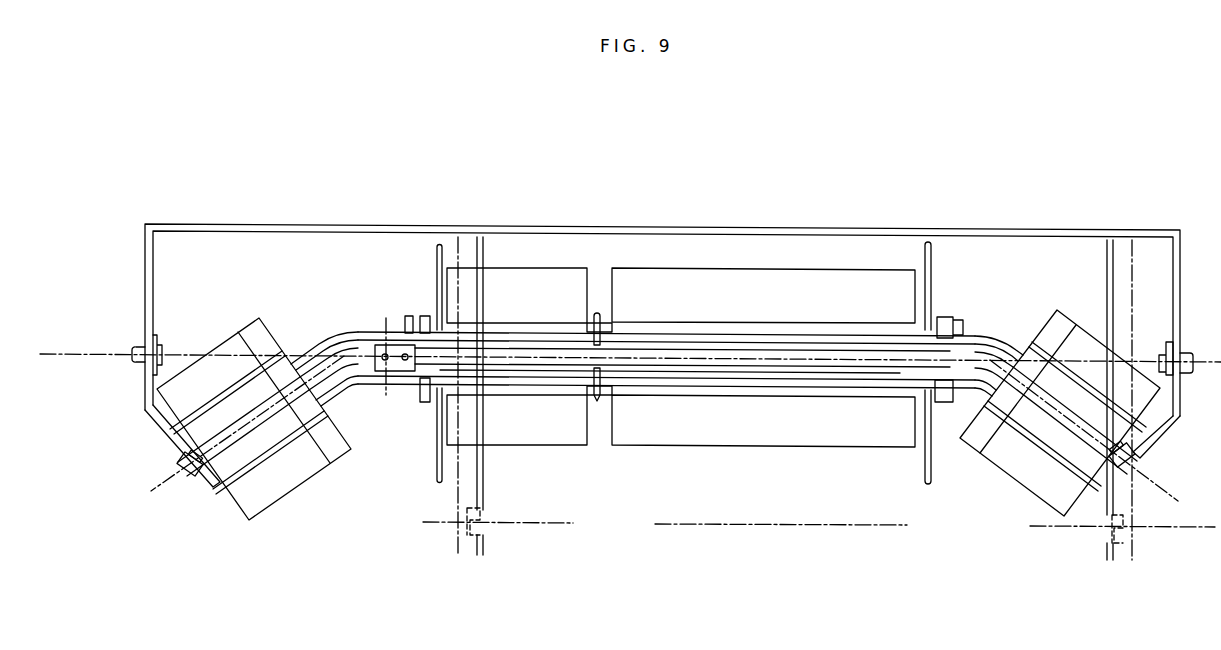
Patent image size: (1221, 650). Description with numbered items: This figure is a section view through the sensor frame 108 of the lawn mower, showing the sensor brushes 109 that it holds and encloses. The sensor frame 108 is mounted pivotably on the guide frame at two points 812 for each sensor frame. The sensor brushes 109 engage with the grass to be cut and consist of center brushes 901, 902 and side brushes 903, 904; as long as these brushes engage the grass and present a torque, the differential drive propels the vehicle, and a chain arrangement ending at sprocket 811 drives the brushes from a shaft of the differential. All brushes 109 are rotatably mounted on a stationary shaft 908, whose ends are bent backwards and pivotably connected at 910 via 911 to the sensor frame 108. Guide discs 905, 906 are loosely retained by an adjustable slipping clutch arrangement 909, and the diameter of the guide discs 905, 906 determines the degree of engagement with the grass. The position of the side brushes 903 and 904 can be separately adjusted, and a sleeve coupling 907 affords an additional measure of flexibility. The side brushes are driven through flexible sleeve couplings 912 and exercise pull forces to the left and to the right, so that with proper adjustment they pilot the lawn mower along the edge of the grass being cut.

The sensor frame 108 is at (872, 228).
The sensor brushes 109 is at (1012, 477).
The sprocket 811 is at (597, 401).
The pivot points 812 is at (477, 527).
The center brush 901 is at (513, 445).
The center brush 902 is at (782, 446).
The side brush 903 is at (287, 495).
The side brush 904 is at (1052, 498).
The guide disc 905 is at (925, 462).
The guide disc 906 is at (437, 486).
The sleeve coupling 907 is at (405, 372).
The stationary shaft 908 is at (978, 340).
The adjustable slipping clutch arrangement 909 is at (943, 318).
The pivot connection 910 is at (180, 465).
The connecting element 911 is at (147, 348).
The flexible sleeve couplings 912 is at (347, 334).